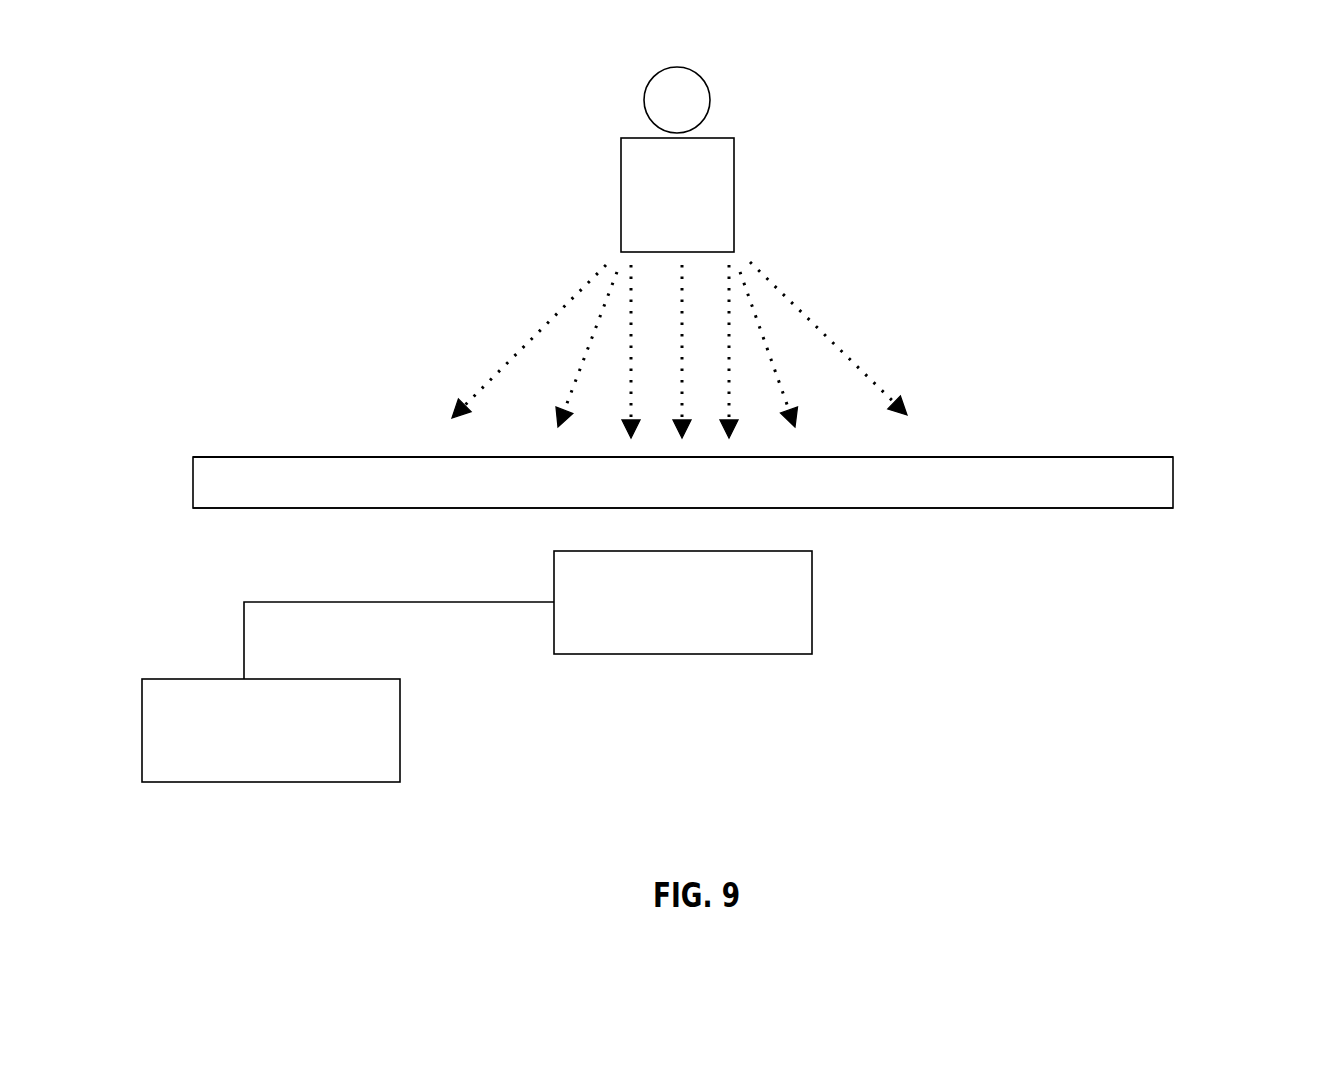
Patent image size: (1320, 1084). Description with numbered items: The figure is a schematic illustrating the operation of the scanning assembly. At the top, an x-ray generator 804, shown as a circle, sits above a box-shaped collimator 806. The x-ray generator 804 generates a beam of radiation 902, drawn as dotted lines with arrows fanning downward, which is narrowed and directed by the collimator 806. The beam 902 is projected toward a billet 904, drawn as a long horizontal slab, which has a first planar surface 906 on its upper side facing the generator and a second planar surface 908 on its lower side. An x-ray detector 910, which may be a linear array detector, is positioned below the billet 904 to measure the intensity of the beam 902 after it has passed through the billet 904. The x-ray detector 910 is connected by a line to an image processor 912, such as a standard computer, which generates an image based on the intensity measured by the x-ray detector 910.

The x-ray generator 804 is at (643, 100).
The collimator 806 is at (621, 188).
The beam of radiation 902 is at (545, 318).
The billet 904 is at (1173, 483).
The first planar surface 906 is at (1018, 455).
The second planar surface 908 is at (1080, 508).
The x-ray detector 910 is at (812, 621).
The image processor 912 is at (400, 743).